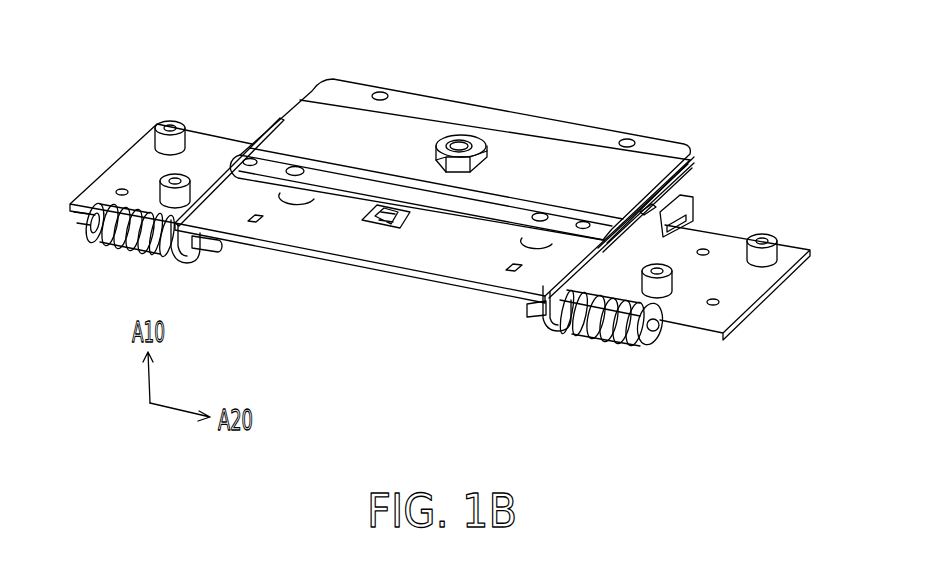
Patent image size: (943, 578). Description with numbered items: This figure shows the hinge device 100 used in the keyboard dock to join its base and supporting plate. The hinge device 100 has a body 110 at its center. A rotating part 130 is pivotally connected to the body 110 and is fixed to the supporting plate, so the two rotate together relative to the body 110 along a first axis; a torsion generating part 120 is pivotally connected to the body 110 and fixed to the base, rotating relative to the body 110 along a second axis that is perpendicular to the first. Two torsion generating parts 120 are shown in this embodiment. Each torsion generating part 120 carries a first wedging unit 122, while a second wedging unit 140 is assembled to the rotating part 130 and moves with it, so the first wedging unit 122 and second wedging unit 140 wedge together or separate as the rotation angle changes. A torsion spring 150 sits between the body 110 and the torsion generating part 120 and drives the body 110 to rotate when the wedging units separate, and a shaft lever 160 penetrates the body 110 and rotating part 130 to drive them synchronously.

The hinge device 100 is at (806, 439).
The body 110 is at (457, 258).
The torsion generating part 120 is at (132, 172).
The first wedging unit 122 is at (709, 221).
The rotating part 130 is at (587, 133).
The second wedging unit 140 is at (694, 205).
The torsion spring 150 is at (611, 340).
The shaft lever 160 is at (457, 142).